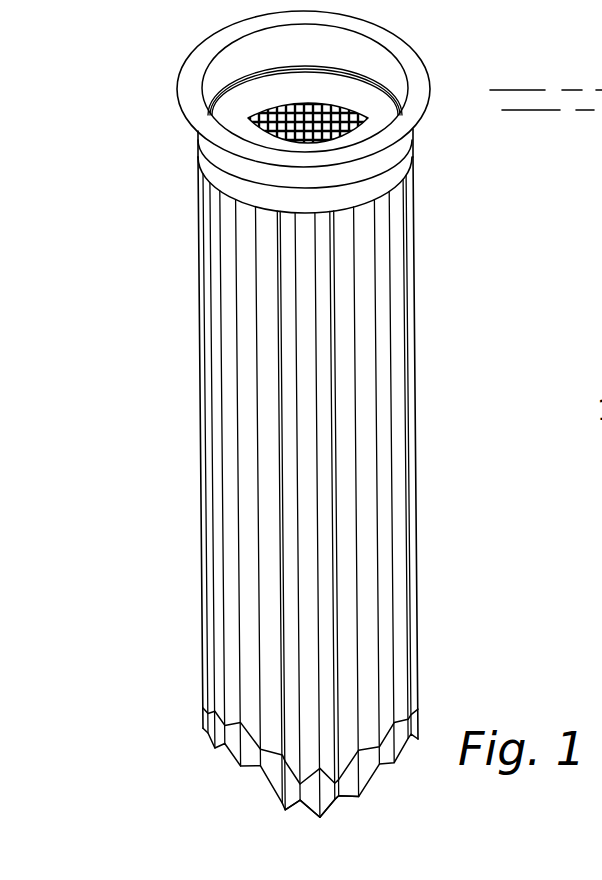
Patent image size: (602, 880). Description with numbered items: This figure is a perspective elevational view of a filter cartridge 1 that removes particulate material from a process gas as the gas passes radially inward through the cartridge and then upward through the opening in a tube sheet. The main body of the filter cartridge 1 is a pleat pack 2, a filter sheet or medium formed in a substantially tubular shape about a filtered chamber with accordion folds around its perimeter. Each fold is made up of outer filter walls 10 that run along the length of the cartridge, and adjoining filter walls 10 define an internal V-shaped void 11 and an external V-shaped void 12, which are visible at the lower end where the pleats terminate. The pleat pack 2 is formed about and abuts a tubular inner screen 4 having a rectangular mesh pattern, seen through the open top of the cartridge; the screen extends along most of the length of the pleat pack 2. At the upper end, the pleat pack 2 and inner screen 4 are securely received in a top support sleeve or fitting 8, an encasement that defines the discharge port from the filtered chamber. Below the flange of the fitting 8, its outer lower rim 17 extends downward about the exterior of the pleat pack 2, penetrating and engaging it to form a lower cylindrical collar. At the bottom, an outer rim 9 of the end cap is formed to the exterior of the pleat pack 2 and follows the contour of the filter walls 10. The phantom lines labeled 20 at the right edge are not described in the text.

The filter cartridge 1 is at (423, 370).
The pleat pack 2 is at (230, 278).
The tubular inner screen 4 is at (313, 112).
The top support sleeve or fitting 8 is at (177, 92).
The outer rim 9 is at (373, 783).
The outer filter walls 10 is at (315, 808).
The internal V-shaped void 11 is at (285, 806).
The external V-shaped void 12 is at (312, 803).
The outer lower rim 17 is at (208, 166).
The housing wall (phantom lines) 20 is at (546, 68).